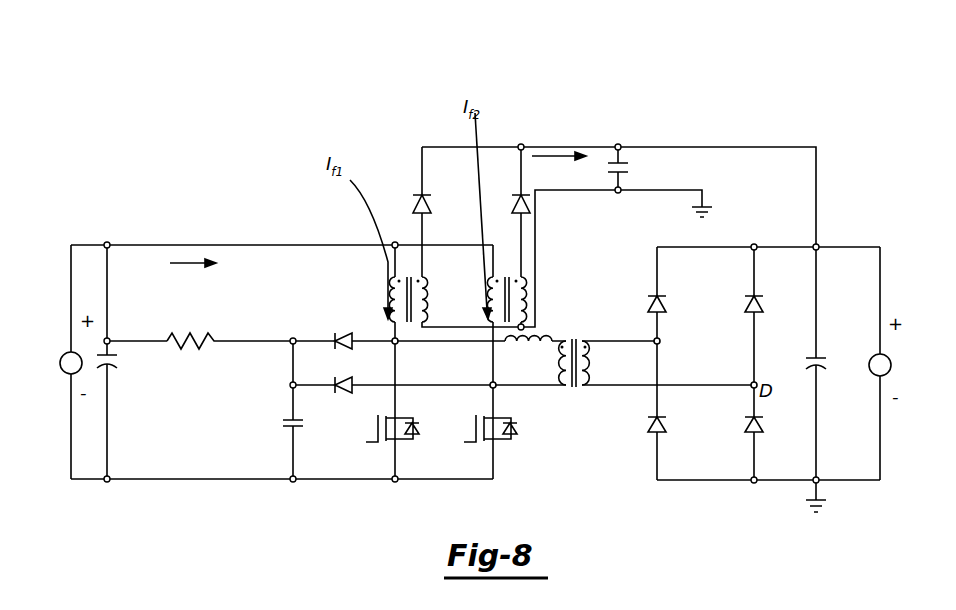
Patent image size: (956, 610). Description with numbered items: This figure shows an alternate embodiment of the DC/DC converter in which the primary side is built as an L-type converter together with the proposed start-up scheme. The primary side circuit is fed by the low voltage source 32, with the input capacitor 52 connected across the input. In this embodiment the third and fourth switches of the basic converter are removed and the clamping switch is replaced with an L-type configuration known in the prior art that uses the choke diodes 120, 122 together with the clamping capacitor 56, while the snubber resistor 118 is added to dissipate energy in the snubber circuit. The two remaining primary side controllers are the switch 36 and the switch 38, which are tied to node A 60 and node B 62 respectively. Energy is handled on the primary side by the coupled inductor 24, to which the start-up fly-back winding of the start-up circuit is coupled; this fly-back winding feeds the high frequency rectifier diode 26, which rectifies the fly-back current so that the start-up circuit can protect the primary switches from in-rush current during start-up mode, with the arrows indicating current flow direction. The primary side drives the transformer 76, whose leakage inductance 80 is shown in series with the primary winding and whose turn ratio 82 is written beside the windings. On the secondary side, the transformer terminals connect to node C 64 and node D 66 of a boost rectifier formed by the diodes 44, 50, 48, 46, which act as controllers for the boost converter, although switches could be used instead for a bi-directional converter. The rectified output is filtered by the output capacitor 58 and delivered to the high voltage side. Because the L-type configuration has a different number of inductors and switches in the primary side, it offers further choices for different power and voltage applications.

The low voltage source 32 is at (37, 382).
The input capacitor 52 is at (122, 392).
The snubber resistor 118 is at (182, 393).
The choke diode 120 is at (296, 321).
The choke diode 122 is at (292, 363).
The clamping capacitor 56 is at (268, 440).
The switch 36 is at (358, 440).
The switch 38 is at (458, 440).
The node A 60 is at (416, 358).
The node B 62 is at (518, 394).
The coupled inductor 24 is at (362, 304).
The turn ratio of transformer 82 is at (358, 250).
The high frequency rectifier diode 26 is at (441, 200).
The leakage inductance 80 is at (540, 333).
The transformer T 76 is at (582, 323).
The diode 44 is at (638, 290).
The diode 50 is at (740, 288).
The diode 48 is at (633, 440).
The diode 46 is at (733, 442).
The node C 64 is at (683, 346).
The output capacitor 58 is at (652, 162).
The node D 66 is at (770, 368).